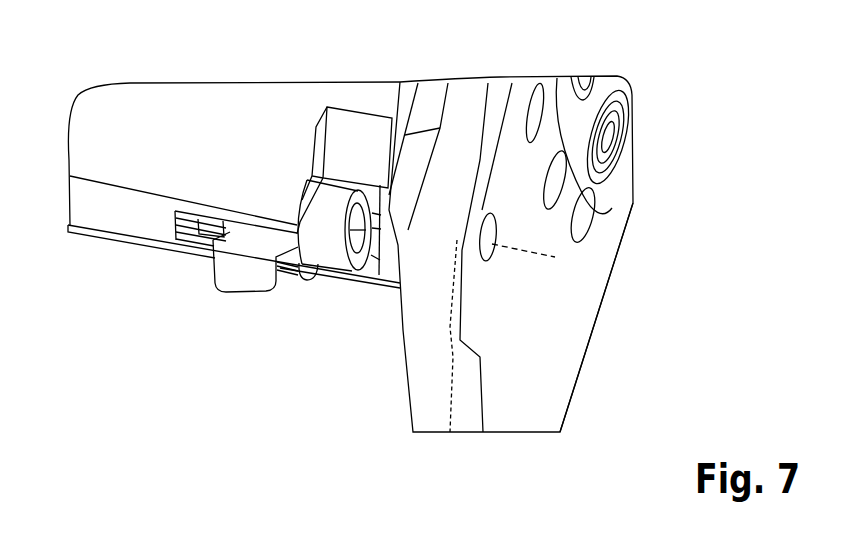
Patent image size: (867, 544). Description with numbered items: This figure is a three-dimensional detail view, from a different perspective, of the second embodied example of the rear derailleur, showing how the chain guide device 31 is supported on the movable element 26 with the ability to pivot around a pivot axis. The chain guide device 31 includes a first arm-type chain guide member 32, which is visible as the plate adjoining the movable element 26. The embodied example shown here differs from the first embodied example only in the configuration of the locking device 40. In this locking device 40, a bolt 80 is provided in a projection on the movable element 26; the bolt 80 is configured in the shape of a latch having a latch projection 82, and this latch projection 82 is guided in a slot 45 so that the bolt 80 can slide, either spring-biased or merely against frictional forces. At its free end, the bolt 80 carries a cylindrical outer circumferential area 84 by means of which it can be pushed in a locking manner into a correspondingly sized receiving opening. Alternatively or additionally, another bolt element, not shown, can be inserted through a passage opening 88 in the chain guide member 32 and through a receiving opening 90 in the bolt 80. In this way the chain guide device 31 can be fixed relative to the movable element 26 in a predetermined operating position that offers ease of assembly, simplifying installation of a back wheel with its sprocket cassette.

The movable element 26 is at (213, 117).
The chain guide device 31 is at (593, 338).
The first arm-type chain guide member 32 is at (470, 108).
The locking device 40 is at (80, 238).
The slot 45 is at (184, 232).
The bolt 80 is at (317, 266).
The latch projection 82 is at (232, 275).
The cylindrical outer circumferential area 84 is at (333, 190).
The passage opening 88 is at (493, 227).
The receiving opening 90 is at (362, 270).